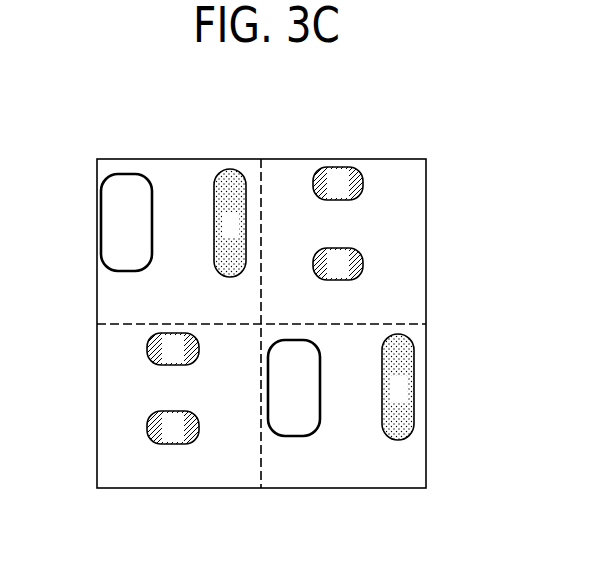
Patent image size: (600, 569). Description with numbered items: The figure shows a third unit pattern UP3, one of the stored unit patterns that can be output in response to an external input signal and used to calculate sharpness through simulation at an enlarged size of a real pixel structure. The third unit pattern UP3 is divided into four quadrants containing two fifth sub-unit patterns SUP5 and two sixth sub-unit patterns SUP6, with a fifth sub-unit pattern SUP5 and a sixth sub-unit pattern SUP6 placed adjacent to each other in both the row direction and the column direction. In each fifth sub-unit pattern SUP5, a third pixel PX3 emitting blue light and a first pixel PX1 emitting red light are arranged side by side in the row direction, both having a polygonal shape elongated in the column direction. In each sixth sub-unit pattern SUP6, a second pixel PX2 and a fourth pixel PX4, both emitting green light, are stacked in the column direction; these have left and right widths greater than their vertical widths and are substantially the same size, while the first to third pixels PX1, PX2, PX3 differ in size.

The third unit pattern UP3 is at (419, 140).
The fifth sub-unit pattern SUP5 is at (224, 322).
The sixth sub-unit pattern SUP6 is at (300, 322).
The first pixel PX1 is at (231, 169).
The second pixel PX2 is at (363, 183).
The third pixel PX3 is at (101, 222).
The fourth pixel PX4 is at (363, 263).